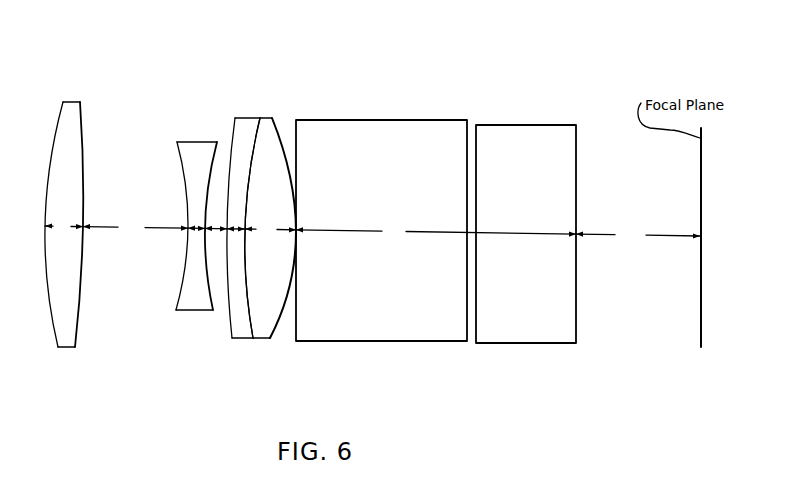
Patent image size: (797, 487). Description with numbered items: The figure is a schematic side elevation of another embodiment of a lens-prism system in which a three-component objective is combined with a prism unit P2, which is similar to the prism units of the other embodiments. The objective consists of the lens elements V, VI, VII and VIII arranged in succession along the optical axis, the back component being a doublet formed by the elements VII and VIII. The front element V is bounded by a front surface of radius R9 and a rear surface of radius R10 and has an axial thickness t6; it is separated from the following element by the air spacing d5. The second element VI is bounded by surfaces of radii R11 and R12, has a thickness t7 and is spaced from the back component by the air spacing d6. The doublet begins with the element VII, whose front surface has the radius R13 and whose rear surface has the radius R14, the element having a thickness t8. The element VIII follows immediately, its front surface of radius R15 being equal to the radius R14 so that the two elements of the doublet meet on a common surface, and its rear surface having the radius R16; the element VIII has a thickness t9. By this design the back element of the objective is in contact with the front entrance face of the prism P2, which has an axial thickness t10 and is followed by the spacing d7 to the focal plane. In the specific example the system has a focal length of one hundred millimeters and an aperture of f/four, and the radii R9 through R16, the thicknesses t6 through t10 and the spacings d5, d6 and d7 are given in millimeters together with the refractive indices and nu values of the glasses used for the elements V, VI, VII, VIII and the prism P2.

The lens element V is at (65, 219).
The lens element VI is at (172, 200).
The lens element VII is at (223, 230).
The lens element VIII is at (286, 230).
The prism unit P2 is at (420, 126).
The radius of curvature of front surface of element V R9 is at (58, 347).
The radius of curvature of rear surface of element V R10 is at (75, 346).
The radius of curvature of front surface of element VI R11 is at (180, 296).
The radius of curvature of rear surface of element VI R12 is at (213, 312).
The radius of curvature of front surface of element VII R13 is at (226, 326).
The radius of curvature of rear surface of element VII R14 is at (248, 328).
The radius of curvature of front surface of element VIII R15 is at (272, 262).
The radius of curvature of rear surface of element VIII R16 is at (276, 326).
The thickness of element V t6 is at (64, 228).
The thickness of element VI t7 is at (192, 229).
The thickness of element VII t8 is at (236, 228).
The thickness of element VIII t9 is at (270, 234).
The thickness of prism P2 t10 is at (436, 234).
The spacing between elements V and VI d5 is at (135, 228).
The spacing between elements VI and VII d6 is at (212, 226).
The spacing behind prism P2 d7 is at (638, 240).